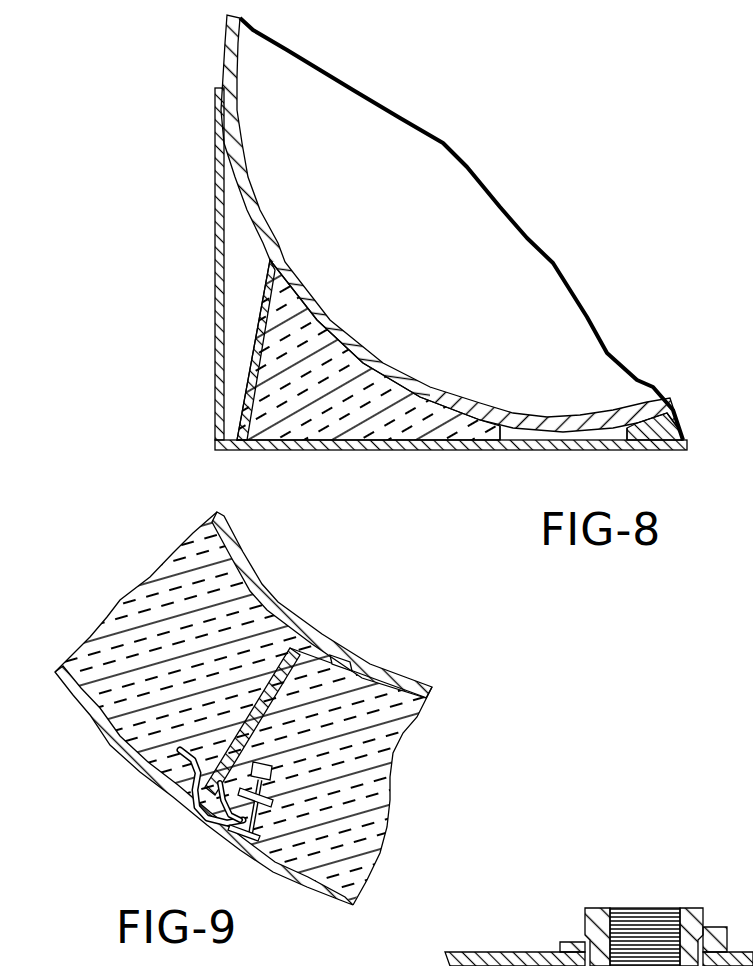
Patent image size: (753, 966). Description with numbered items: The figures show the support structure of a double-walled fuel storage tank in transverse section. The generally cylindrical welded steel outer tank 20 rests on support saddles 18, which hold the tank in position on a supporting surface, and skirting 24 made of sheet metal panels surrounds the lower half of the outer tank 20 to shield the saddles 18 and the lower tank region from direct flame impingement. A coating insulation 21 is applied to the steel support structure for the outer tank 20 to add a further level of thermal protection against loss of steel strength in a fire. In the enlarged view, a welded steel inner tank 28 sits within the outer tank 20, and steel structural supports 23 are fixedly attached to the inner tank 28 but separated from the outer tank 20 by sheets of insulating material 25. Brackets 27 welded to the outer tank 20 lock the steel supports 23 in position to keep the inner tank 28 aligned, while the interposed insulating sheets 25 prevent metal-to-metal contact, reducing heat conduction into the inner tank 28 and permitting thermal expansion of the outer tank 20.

In FIG. 8, the support saddle 18 is at (254, 355).
In FIG. 8, the outer tank 20 is at (224, 62).
In FIG. 9, the outer tank 20 is at (122, 766).
In FIG. 8, the coating insulation 21 is at (348, 428).
In FIG. 9, the steel structural support 23 is at (266, 678).
In FIG. 8, the skirting 24 is at (214, 200).
In FIG. 9, the insulating sheet 25 is at (200, 750).
In FIG. 9, the bracket 27 is at (277, 797).
In FIG. 9, the inner tank 28 is at (253, 583).